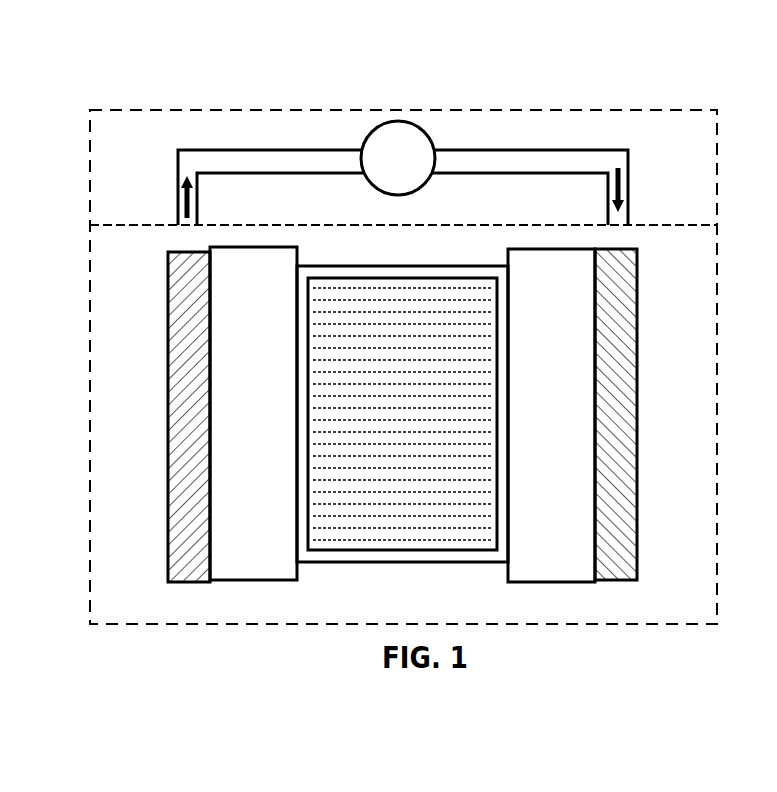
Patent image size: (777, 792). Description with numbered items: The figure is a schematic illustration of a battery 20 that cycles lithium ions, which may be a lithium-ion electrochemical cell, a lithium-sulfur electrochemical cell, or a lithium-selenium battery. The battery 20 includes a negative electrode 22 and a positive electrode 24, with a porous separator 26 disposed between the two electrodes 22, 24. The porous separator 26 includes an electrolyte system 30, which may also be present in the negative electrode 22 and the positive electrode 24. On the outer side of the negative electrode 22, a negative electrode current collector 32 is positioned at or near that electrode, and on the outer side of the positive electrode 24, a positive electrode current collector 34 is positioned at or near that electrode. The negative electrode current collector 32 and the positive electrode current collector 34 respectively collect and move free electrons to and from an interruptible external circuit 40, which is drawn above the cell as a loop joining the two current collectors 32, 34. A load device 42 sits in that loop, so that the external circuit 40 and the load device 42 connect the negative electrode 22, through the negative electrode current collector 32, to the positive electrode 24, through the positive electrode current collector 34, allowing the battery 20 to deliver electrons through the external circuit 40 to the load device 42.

The battery 20 is at (359, 432).
The negative electrode 22 is at (253, 413).
The positive electrode 24 is at (551, 415).
The porous separator 26 is at (402, 414).
The electrolyte system 30 is at (435, 556).
The negative electrode current collector 32 is at (168, 308).
The positive electrode current collector 34 is at (637, 299).
The external circuit 40 is at (140, 110).
The load device 42 is at (403, 173).